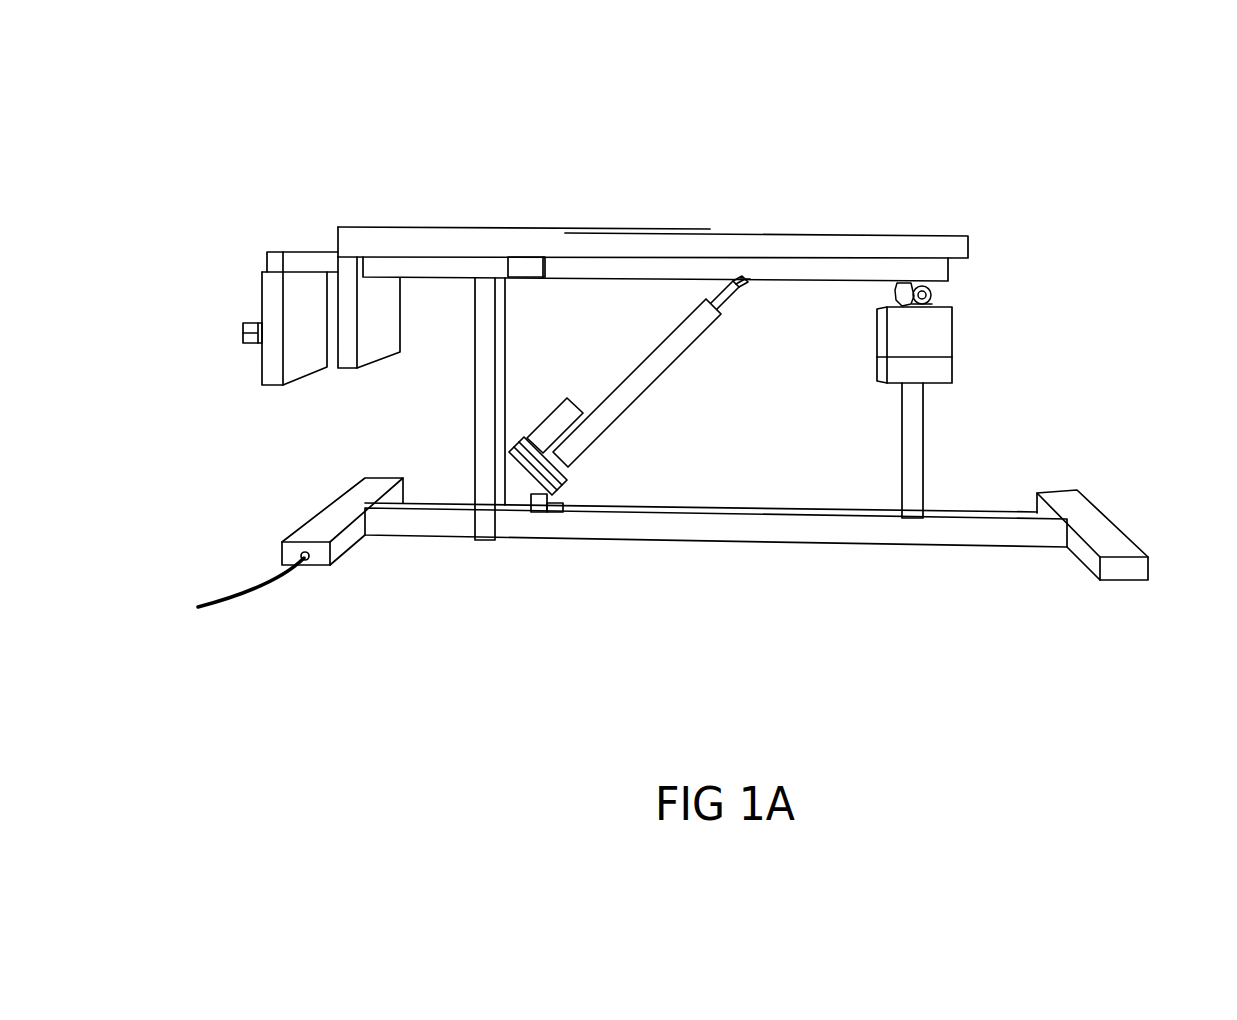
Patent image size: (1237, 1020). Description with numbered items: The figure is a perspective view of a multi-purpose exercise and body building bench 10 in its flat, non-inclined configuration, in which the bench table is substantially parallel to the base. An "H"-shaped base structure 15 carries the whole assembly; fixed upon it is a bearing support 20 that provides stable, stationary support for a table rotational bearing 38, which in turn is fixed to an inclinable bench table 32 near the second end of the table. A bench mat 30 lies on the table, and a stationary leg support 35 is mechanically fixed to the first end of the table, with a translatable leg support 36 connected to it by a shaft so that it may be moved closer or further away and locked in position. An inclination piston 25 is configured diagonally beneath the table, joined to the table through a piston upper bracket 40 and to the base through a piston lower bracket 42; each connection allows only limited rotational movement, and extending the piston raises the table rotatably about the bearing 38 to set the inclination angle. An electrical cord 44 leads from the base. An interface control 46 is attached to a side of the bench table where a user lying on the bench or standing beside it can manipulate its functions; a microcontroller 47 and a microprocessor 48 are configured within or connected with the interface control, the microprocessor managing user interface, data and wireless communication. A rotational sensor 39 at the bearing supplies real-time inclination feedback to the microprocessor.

The multi-purpose exercise and body building bench 10 is at (1155, 137).
The "H"-shaped base structure 15 is at (983, 510).
The bearing support 20 is at (952, 357).
The inclination piston 25 is at (663, 383).
The bench mat 30 is at (405, 228).
The inclinable bench table 32 is at (948, 273).
The stationary leg support 35 is at (378, 354).
The translatable leg support 36 is at (290, 252).
The table rotational bearing 38 is at (932, 297).
The rotational sensor 39 is at (895, 283).
The piston upper bracket 40 is at (755, 280).
The piston lower bracket 42 is at (550, 505).
The electrical cord 44 is at (247, 594).
The interface control 46 is at (523, 278).
The microcontroller 47 is at (580, 298).
The microprocessor 48 is at (553, 278).